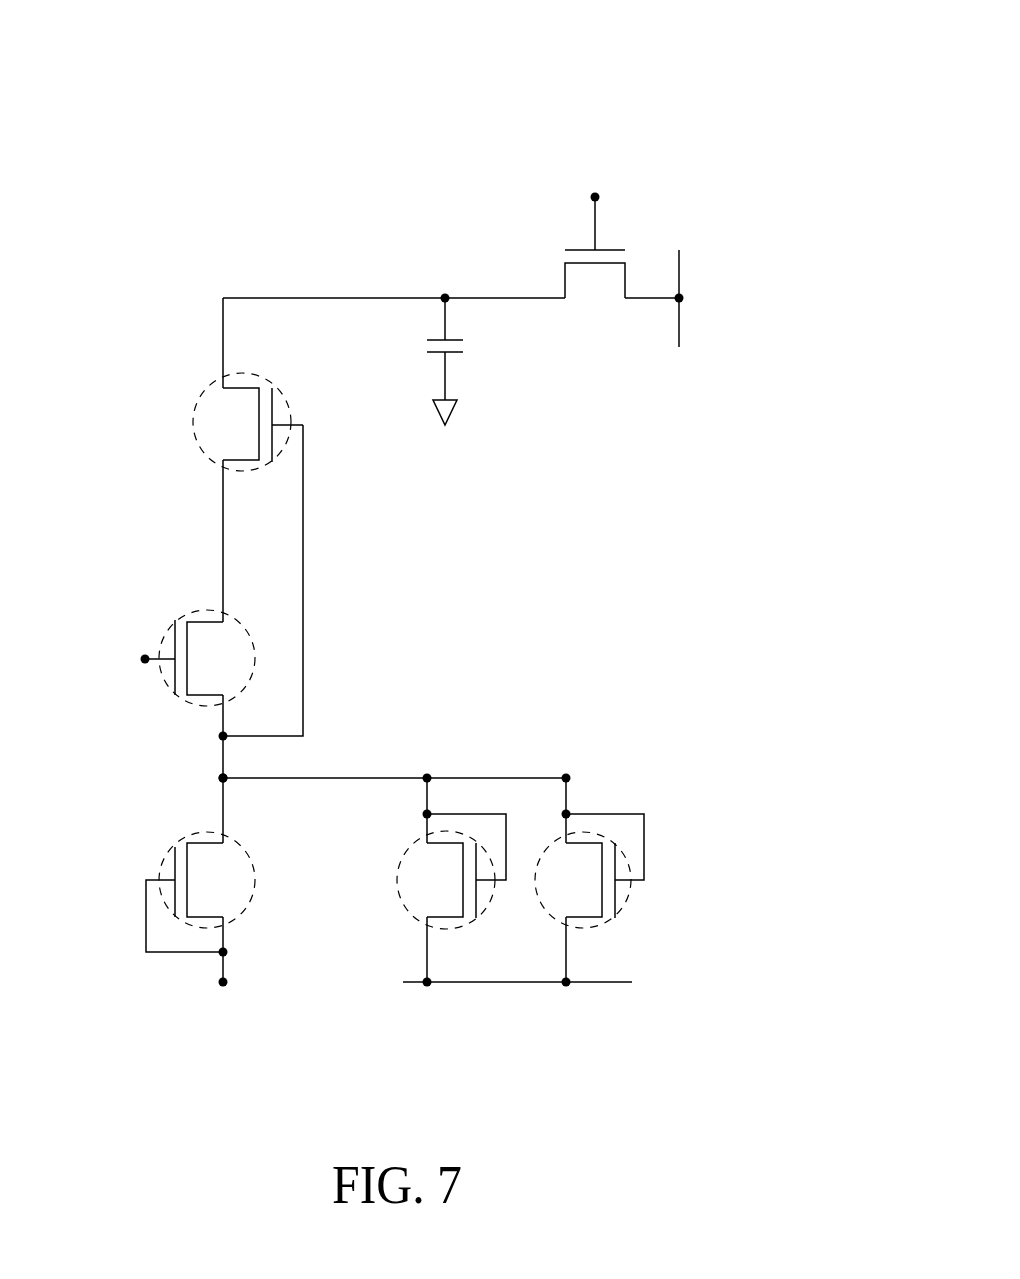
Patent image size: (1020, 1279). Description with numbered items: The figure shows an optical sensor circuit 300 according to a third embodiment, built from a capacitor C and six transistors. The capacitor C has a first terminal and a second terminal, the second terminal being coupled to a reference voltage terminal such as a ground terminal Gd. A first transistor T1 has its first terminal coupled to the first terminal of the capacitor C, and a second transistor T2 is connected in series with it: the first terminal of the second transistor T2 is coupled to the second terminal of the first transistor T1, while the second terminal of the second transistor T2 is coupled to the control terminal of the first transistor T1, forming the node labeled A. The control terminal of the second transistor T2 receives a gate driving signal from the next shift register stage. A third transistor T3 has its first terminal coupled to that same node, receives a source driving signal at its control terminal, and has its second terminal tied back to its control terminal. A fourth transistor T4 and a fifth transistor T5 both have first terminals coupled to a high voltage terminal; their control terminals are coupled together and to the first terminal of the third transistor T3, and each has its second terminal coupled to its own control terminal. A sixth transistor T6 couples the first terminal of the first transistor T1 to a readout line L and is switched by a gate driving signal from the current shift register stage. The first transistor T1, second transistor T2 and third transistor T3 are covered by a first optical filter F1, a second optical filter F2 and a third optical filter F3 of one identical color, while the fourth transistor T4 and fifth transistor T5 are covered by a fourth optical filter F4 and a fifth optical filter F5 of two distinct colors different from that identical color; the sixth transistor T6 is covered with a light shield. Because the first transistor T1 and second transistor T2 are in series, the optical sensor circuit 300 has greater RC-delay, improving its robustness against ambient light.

The optical sensor circuit 300 is at (718, 74).
The first transistor T1 is at (248, 453).
The second transistor T2 is at (206, 690).
The third transistor T3 is at (187, 882).
The fourth transistor T4 is at (432, 882).
The fifth transistor T5 is at (608, 882).
The sixth transistor T6 is at (595, 295).
The first optical filter F1 is at (252, 472).
The second optical filter F2 is at (197, 705).
The third optical filter F3 is at (165, 862).
The fourth optical filter F4 is at (403, 857).
The fifth optical filter F5 is at (620, 908).
The capacitor C is at (460, 349).
The ground terminal Gd is at (466, 417).
The readout line L is at (681, 316).
The node A is at (209, 777).